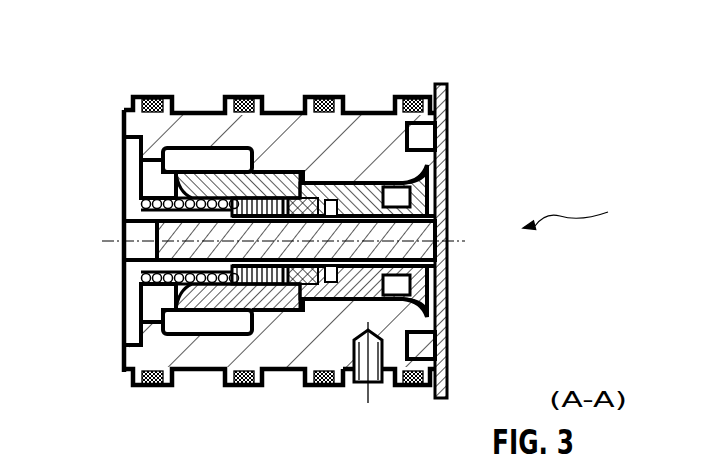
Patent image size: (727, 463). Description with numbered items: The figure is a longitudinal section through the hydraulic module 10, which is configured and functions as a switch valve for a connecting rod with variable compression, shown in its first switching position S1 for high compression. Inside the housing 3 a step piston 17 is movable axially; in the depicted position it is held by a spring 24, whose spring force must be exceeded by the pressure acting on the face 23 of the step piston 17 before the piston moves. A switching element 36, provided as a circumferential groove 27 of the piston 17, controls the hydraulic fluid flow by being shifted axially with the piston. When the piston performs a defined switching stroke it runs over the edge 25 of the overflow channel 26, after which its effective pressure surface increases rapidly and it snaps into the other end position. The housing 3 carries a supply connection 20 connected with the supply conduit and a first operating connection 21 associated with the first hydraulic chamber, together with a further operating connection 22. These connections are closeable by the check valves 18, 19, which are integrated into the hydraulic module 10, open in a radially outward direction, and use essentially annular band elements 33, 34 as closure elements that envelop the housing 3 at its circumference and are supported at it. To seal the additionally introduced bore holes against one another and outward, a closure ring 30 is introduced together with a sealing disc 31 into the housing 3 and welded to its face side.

The housing 3 is at (110, 121).
The hydraulic module 10 is at (550, 148).
The step piston 17 is at (165, 176).
The check valve 18 is at (207, 67).
The check valve 19 is at (362, 67).
The supply connection 20 is at (268, 380).
The first operating connection 21 is at (177, 386).
The operating connection 22 is at (347, 382).
The face 23 is at (333, 323).
The spring 24 is at (152, 286).
The edge 25 is at (260, 148).
The overflow channel 26 is at (182, 140).
The circumferential groove 27 is at (409, 169).
The closure ring 30 is at (440, 346).
The sealing disc 31 is at (440, 370).
The band element 33 is at (208, 100).
The band element 34 is at (367, 100).
The switching element 36 is at (403, 183).
The first switching position S1 is at (579, 210).